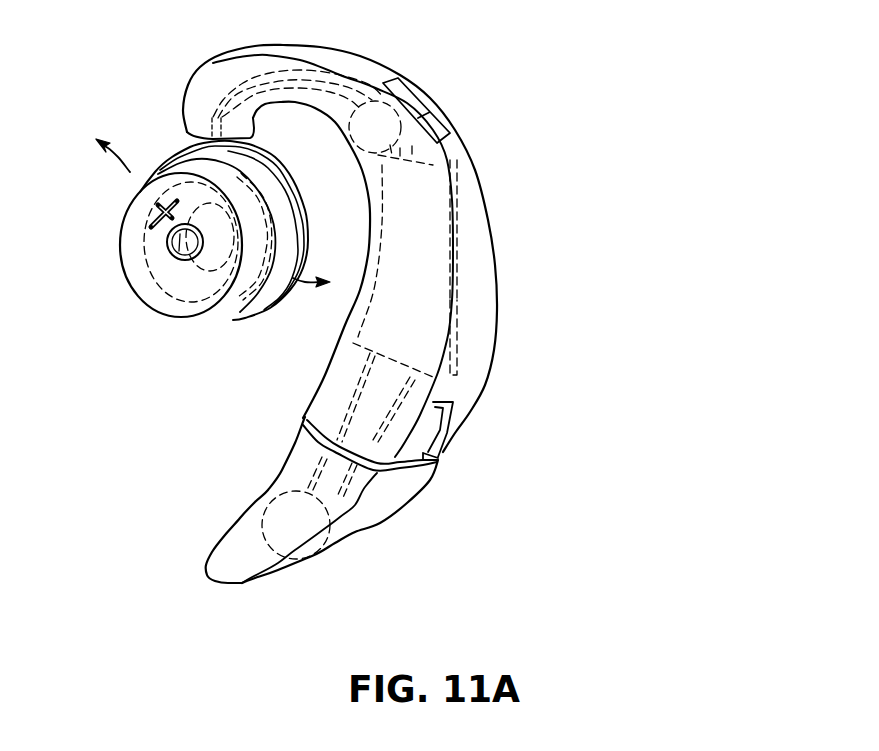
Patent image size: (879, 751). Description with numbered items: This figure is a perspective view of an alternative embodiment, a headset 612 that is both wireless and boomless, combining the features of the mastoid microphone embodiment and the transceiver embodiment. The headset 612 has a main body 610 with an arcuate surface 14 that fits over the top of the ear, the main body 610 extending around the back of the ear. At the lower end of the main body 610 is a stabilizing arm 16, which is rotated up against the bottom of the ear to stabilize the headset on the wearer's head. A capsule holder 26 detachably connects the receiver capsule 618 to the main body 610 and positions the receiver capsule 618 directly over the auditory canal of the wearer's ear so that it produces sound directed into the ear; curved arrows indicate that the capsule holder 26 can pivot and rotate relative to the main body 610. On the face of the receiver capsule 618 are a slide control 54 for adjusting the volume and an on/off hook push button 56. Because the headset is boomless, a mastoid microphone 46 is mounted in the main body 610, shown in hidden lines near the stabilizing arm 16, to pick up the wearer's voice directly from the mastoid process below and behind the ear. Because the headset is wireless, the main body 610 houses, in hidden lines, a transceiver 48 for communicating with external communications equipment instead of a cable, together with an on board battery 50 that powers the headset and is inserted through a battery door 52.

The headset 612 is at (557, 63).
The main body 610 is at (487, 306).
The arcuate surface 14 is at (308, 106).
The capsule holder 26 is at (207, 137).
The receiver capsule 618 is at (186, 297).
The slide control 54 is at (160, 212).
The on/off hook push button 56 is at (172, 250).
The battery door 52 is at (423, 115).
The battery 50 is at (393, 130).
The transceiver 48 is at (423, 226).
The mastoid microphone 46 is at (277, 527).
The stabilizing arm 16 is at (385, 510).